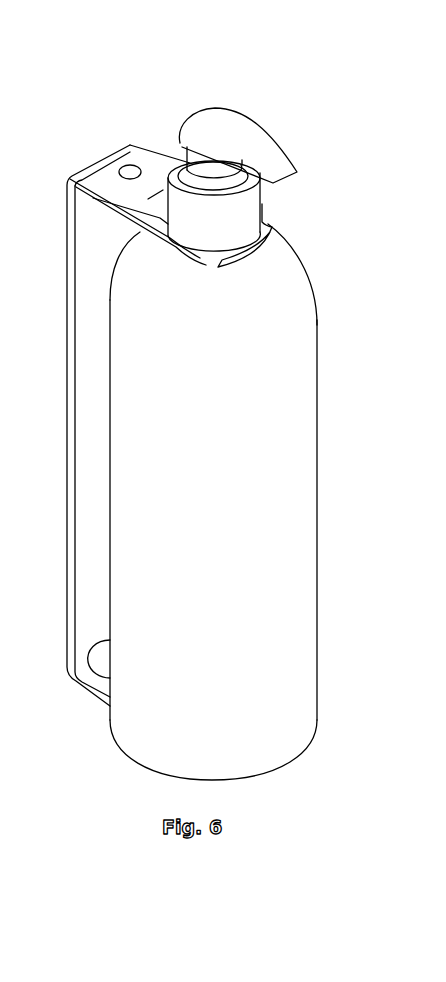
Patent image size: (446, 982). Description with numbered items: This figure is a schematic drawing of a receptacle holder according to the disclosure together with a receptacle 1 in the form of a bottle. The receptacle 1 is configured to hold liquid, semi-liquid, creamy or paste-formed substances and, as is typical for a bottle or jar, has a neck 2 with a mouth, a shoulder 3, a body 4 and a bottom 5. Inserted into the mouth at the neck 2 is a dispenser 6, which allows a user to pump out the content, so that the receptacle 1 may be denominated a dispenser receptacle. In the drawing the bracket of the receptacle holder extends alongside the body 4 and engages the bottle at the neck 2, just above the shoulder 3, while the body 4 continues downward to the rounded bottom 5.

The receptacle 1 is at (242, 427).
The neck 2 is at (198, 253).
The shoulder 3 is at (249, 507).
The body 4 is at (278, 512).
The bottom 5 is at (295, 750).
The dispenser 6 is at (225, 135).